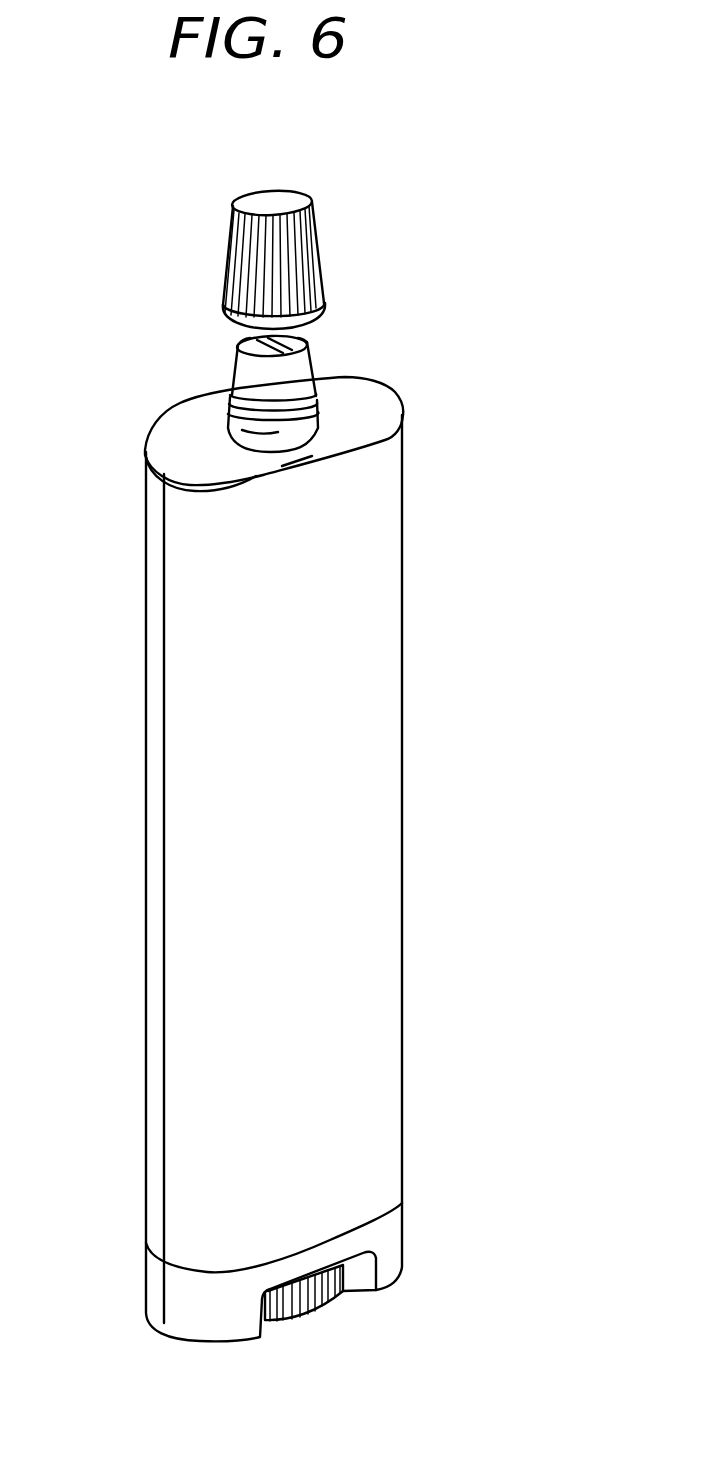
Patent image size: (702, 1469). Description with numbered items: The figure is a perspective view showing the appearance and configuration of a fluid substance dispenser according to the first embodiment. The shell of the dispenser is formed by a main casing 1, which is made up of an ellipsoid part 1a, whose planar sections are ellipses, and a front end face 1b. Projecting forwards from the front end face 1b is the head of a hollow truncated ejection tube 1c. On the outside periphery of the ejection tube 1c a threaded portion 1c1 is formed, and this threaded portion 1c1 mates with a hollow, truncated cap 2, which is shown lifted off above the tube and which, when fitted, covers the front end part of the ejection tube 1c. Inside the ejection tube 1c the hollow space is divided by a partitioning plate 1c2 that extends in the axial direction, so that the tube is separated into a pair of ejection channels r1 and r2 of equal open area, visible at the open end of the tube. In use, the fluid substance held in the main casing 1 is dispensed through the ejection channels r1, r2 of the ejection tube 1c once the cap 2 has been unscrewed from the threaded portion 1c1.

The main casing 1 is at (412, 605).
The ellipsoid part 1a is at (378, 757).
The front end face 1b is at (388, 405).
The ejection tube 1c is at (237, 370).
The threaded portion 1c1 is at (230, 395).
The partitioning plate 1c2 is at (287, 338).
The cap 2 is at (237, 242).
The ejection channel r1 is at (250, 338).
The ejection channel r2 is at (305, 340).